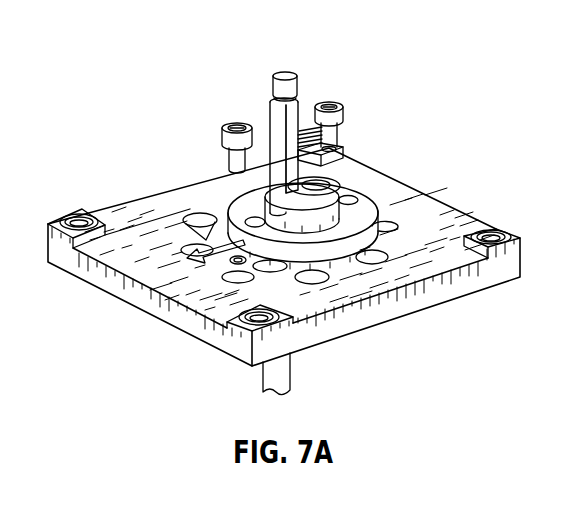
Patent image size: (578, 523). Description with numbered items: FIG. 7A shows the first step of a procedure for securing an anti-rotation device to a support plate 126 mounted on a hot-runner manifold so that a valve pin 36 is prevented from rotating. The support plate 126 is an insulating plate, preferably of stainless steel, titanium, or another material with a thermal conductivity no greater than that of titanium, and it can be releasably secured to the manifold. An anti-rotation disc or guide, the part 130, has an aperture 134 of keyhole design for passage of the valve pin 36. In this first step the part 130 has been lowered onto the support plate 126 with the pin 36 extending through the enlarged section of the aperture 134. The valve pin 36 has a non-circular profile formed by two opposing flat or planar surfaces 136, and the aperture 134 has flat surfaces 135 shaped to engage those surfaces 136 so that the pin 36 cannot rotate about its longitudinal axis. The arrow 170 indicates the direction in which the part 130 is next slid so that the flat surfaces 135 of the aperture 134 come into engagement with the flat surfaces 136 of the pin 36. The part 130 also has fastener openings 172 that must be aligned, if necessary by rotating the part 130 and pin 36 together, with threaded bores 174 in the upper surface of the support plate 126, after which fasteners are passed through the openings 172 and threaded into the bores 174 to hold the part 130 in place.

The valve pin 36 is at (277, 122).
The support plate 126 is at (407, 270).
The anti-rotation part 130 is at (250, 203).
The aperture 134 is at (327, 190).
The flat surfaces of aperture 135 is at (298, 185).
The flat surfaces of valve pin 136 is at (325, 178).
The arrow 170 is at (207, 238).
The fastener openings 172 is at (353, 200).
The threaded bores 174 is at (240, 263).